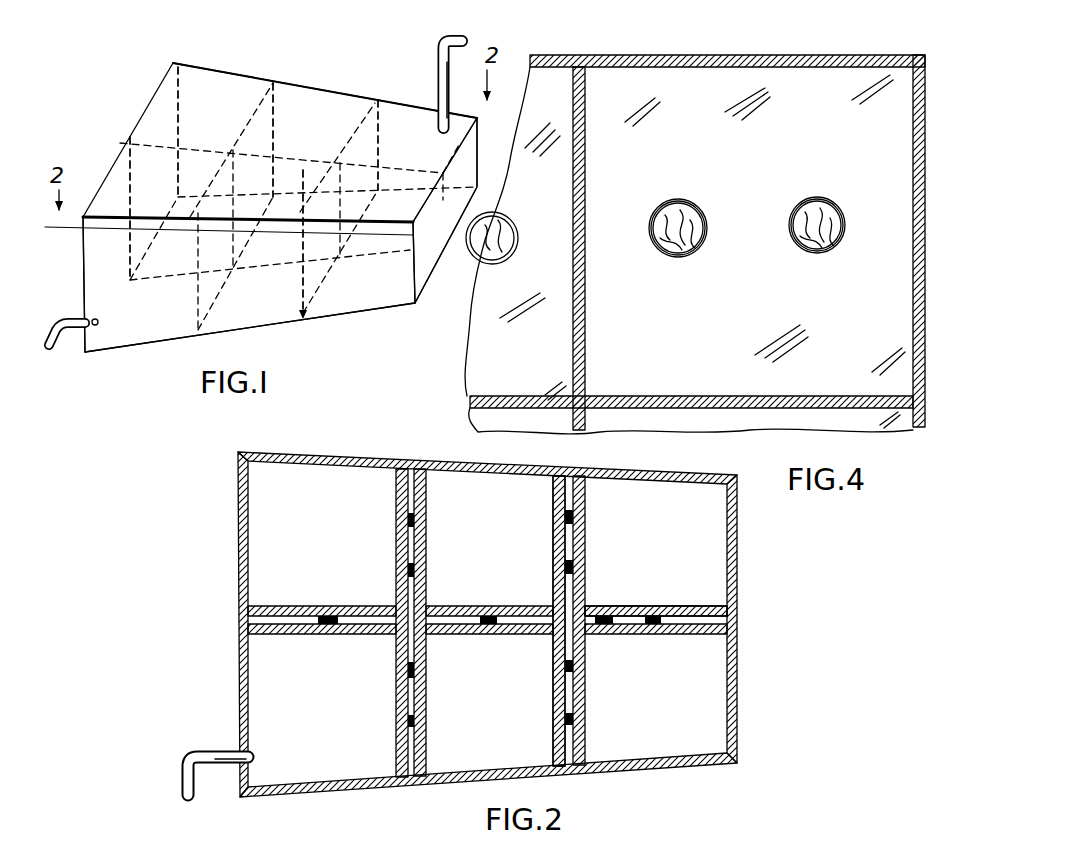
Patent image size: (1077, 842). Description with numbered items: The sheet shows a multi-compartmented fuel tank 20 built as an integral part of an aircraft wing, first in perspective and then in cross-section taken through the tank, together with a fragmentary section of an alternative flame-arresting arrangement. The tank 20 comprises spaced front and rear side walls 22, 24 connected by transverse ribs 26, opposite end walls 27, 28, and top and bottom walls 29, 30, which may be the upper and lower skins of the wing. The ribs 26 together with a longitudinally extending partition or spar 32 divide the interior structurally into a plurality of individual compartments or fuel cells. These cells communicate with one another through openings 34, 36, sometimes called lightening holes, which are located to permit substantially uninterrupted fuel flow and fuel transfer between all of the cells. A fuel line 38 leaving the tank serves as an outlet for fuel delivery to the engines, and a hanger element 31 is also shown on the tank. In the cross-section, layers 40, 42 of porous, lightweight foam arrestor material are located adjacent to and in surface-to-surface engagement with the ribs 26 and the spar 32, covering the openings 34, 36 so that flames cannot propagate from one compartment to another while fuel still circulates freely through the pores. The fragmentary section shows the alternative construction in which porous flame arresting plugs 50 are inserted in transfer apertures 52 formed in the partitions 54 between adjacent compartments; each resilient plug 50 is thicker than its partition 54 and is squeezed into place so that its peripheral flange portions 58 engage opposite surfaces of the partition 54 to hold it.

In FIG. 1, the multi-compartmented fuel tank 20 is at (217, 60).
In FIG. 2, the front side wall 22 is at (375, 430).
In FIG. 1, the rear side wall 24 is at (128, 331).
In FIG. 2, the rear side wall 24 is at (357, 790).
In FIG. 1, the transverse rib 26 is at (360, 128).
In FIG. 2, the transverse rib 26 is at (552, 507).
In FIG. 1, the end wall 27 is at (83, 287).
In FIG. 2, the end wall 27 is at (238, 565).
In FIG. 1, the end wall 28 is at (428, 270).
In FIG. 2, the end wall 28 is at (738, 552).
In FIG. 1, the top wall 29 is at (185, 108).
In FIG. 1, the bottom wall 30 is at (303, 322).
In FIG. 2, the bottom wall 30 is at (712, 705).
In FIG. 1, the hanger hook 31 is at (426, 44).
In FIG. 1, the spar 32 is at (153, 178).
In FIG. 2, the spar 32 is at (617, 620).
In FIG. 2, the opening 34 is at (410, 519).
In FIG. 2, the opening 36 is at (323, 617).
In FIG. 1, the fuel line 38 is at (63, 353).
In FIG. 2, the fuel line 38 is at (202, 750).
In FIG. 2, the layer of foam arrestor material 40 is at (552, 530).
In FIG. 2, the layer of foam arrestor material 42 is at (315, 636).
In FIG. 4, the porous flame arresting plug 50 is at (784, 207).
In FIG. 4, the transfer aperture 52 is at (678, 258).
In FIG. 4, the partition 54 is at (780, 92).
In FIG. 4, the peripheral or flange portion 58 is at (668, 203).